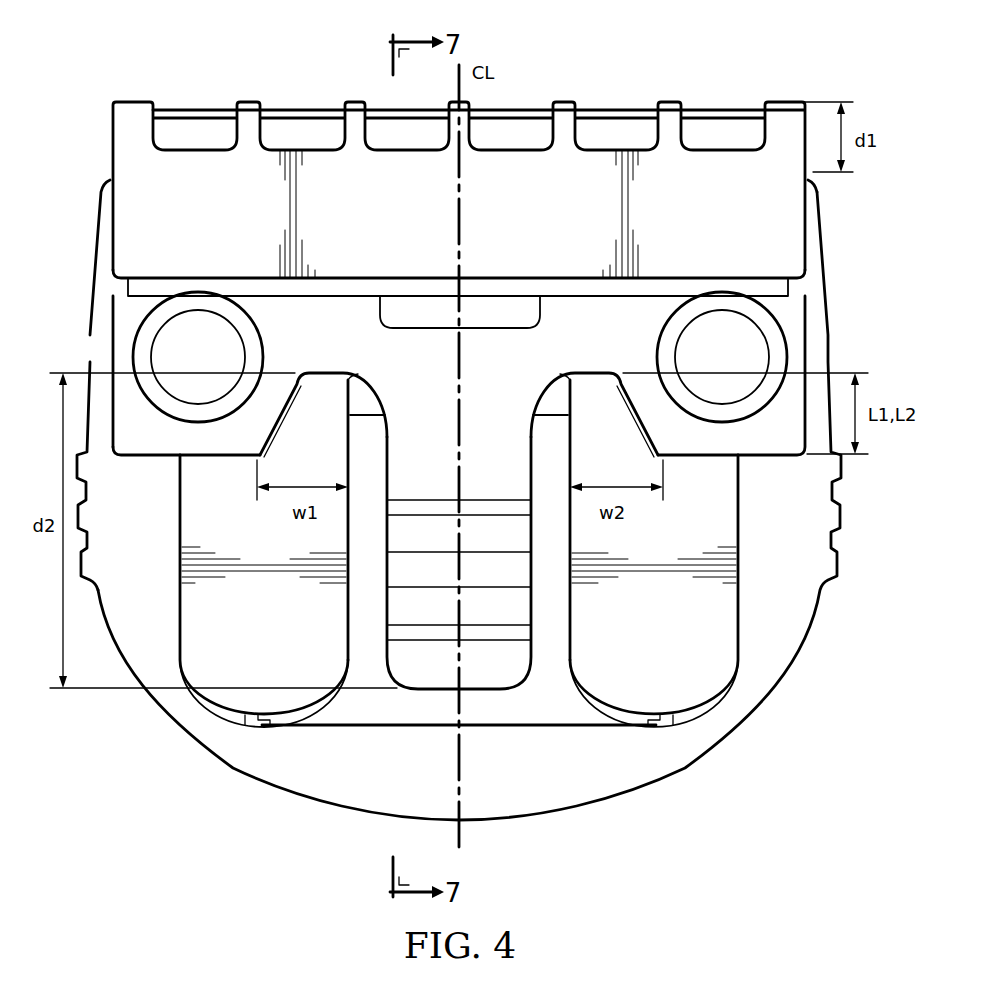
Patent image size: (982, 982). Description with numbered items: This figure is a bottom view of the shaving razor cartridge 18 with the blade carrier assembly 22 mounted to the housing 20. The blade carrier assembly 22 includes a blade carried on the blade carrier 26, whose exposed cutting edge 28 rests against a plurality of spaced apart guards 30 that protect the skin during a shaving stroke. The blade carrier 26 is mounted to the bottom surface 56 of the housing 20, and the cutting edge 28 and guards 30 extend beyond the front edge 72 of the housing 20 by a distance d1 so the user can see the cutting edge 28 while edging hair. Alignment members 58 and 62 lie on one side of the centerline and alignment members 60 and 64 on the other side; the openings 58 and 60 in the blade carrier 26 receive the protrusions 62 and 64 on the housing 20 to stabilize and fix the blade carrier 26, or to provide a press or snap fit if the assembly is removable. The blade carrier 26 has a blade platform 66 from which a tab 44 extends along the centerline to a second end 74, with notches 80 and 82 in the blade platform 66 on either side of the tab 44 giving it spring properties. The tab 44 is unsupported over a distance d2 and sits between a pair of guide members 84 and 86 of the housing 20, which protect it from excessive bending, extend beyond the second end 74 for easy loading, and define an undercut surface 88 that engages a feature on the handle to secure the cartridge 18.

The shaving razor cartridge 18 is at (836, 52).
The housing 20 is at (710, 771).
The blade carrier assembly 22 is at (122, 302).
The blade carrier 26 is at (799, 233).
The cutting edge 28 is at (198, 110).
The spaced apart guards 30 is at (353, 98).
The tab 44 is at (522, 603).
The bottom surface 56 is at (172, 713).
The alignment member 58 is at (265, 338).
The alignment member 60 is at (656, 338).
The alignment member 62 is at (198, 357).
The alignment member 64 is at (722, 357).
The blade platform 66 is at (104, 350).
The front edge 72 is at (809, 178).
The second end 74 is at (490, 693).
The notch 80 is at (320, 396).
The notch 82 is at (598, 396).
The guide member 84 is at (192, 608).
The guide member 86 is at (728, 608).
The undercut surface 88 is at (298, 722).